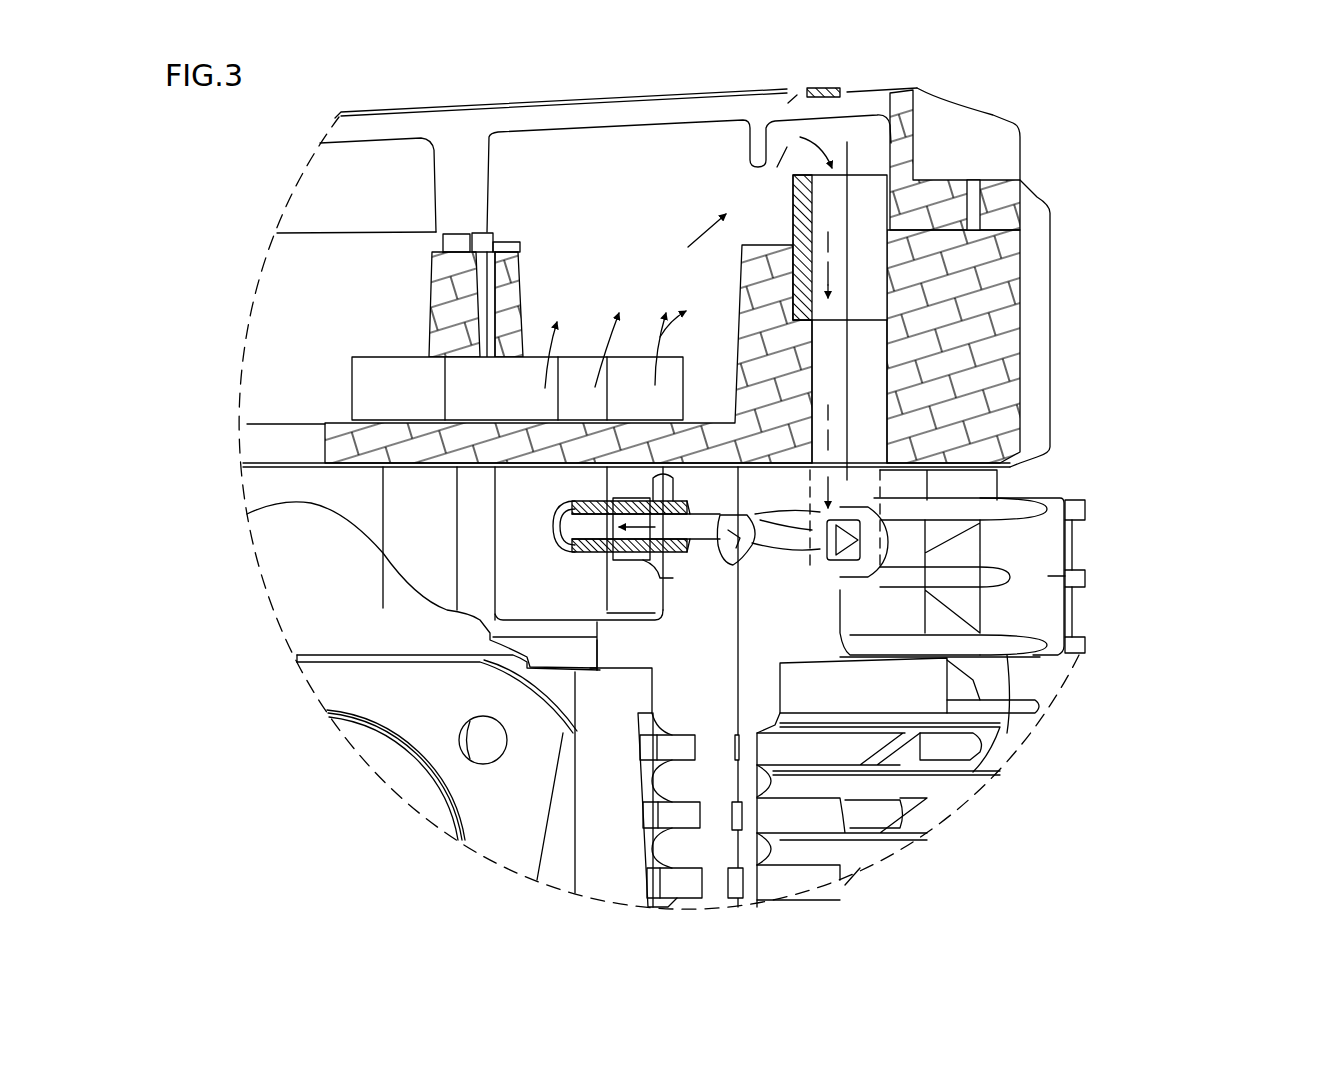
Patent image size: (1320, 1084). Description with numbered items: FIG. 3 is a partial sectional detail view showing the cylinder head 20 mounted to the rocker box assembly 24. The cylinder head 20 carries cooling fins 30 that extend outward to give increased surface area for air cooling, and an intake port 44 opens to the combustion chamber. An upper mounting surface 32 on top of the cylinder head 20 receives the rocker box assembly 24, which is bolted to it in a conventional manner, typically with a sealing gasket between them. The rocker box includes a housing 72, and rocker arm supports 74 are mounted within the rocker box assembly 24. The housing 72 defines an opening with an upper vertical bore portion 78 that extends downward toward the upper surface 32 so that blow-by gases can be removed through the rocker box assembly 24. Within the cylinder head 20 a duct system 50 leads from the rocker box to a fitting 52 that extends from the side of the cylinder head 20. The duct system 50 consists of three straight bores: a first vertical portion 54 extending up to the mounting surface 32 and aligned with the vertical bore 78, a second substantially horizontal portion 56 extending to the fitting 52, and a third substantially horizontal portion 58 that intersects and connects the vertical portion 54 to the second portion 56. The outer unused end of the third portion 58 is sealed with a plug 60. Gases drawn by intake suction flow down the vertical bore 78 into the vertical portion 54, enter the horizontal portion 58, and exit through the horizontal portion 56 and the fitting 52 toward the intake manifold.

The cylinder head 20 is at (1162, 400).
The rocker box assembly 24 is at (1092, 296).
The cooling fins 30 is at (1033, 705).
The upper mounting surface 32 is at (917, 463).
The intake port 44 is at (430, 803).
The duct system 50 is at (780, 540).
The fitting 52 is at (595, 553).
The first vertical portion 54 is at (857, 478).
The second substantially horizontal duct portion 56 is at (700, 543).
The third portion 58 is at (770, 562).
The plug 60 is at (870, 528).
The housing 72 is at (1052, 393).
The rocker arm supports 74 is at (740, 300).
The upper vertical bore portion 78 is at (812, 218).